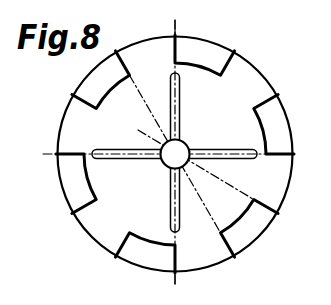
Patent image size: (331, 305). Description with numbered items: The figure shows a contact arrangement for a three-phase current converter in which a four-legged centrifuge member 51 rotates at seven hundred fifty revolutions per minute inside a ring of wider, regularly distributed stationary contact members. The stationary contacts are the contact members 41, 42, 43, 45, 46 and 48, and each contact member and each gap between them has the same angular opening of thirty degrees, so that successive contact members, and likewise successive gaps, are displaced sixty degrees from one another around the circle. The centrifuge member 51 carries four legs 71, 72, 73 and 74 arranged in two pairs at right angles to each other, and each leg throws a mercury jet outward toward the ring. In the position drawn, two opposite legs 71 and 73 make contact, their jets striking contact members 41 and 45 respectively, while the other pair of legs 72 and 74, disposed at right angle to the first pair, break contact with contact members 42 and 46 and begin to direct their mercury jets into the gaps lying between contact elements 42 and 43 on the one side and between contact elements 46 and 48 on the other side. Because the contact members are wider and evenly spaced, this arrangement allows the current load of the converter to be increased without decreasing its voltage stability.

The contact member 41 is at (205, 53).
The contact member 42 is at (277, 108).
The contact element 43 is at (250, 240).
The contact member 45 is at (135, 253).
The contact member 46 is at (72, 187).
The contact element 48 is at (88, 82).
The four-legged centrifuge member 51 is at (153, 167).
The leg 71 is at (181, 108).
The leg 72 is at (226, 158).
The leg 73 is at (171, 211).
The leg 74 is at (130, 143).